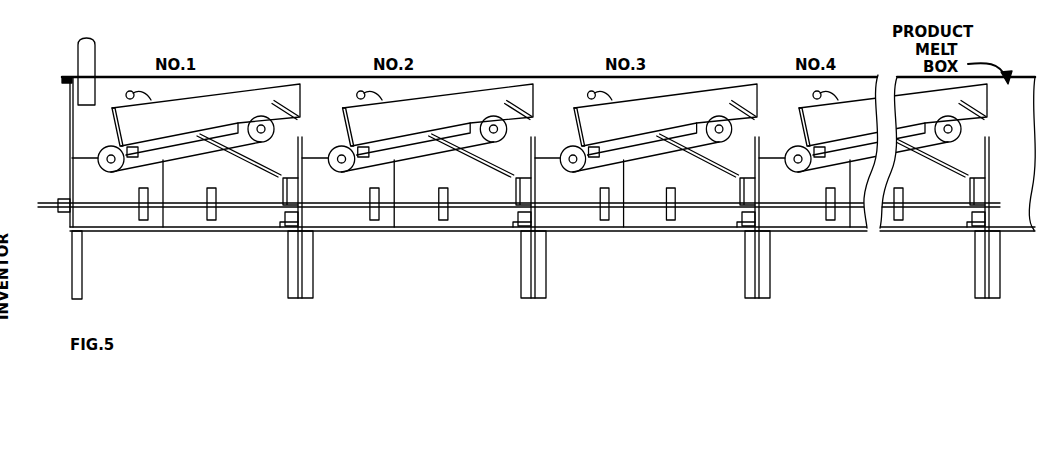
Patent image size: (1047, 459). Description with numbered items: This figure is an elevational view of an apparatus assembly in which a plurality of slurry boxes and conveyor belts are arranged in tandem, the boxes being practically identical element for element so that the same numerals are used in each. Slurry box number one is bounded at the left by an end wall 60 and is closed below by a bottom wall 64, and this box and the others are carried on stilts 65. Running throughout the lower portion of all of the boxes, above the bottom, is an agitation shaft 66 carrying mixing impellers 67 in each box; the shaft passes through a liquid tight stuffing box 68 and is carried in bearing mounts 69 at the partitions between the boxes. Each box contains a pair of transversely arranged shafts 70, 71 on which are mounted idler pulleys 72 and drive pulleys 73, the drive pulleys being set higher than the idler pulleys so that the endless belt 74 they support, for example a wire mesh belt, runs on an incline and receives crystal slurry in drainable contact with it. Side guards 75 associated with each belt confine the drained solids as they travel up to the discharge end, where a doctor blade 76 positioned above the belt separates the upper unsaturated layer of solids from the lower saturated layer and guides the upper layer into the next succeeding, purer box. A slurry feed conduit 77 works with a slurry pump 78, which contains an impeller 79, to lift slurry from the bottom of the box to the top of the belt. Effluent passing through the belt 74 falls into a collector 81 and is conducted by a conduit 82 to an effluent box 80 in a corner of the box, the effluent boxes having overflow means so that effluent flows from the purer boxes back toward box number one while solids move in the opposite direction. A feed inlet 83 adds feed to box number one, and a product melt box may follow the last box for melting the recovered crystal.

The end wall 60 is at (70, 128).
The bottom wall 64 is at (250, 225).
The stilts 65 is at (82, 275).
The agitation shaft 66 is at (40, 203).
The mixing impellers 67 is at (138, 195).
The stuffing box 68 is at (62, 200).
The bearing mounts 69 is at (300, 190).
The shaft 70 is at (93, 130).
The shaft 71 is at (274, 130).
The idler pulleys 72 is at (103, 168).
The drive pulleys 73 is at (258, 143).
The endless belt 74 is at (212, 158).
The side guards 75 is at (201, 97).
The doctor blade 76 is at (274, 102).
The slurry feed conduit 77 is at (489, 89).
The slurry pump 78 is at (283, 224).
The impeller 79 is at (305, 215).
The effluent box 80 is at (162, 222).
The collector 81 is at (186, 132).
The conduit 82 is at (140, 152).
The feed inlet 83 is at (88, 55).